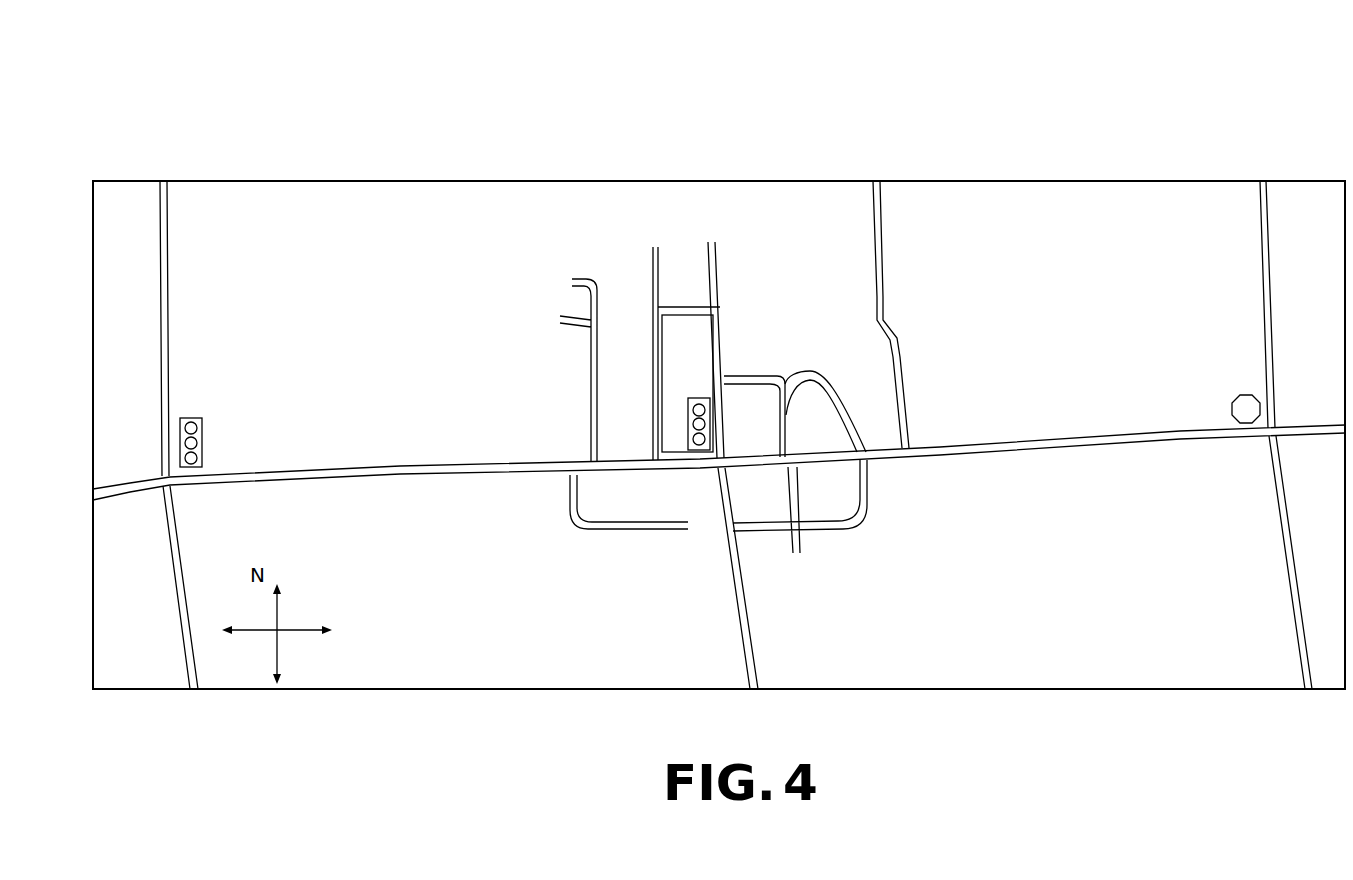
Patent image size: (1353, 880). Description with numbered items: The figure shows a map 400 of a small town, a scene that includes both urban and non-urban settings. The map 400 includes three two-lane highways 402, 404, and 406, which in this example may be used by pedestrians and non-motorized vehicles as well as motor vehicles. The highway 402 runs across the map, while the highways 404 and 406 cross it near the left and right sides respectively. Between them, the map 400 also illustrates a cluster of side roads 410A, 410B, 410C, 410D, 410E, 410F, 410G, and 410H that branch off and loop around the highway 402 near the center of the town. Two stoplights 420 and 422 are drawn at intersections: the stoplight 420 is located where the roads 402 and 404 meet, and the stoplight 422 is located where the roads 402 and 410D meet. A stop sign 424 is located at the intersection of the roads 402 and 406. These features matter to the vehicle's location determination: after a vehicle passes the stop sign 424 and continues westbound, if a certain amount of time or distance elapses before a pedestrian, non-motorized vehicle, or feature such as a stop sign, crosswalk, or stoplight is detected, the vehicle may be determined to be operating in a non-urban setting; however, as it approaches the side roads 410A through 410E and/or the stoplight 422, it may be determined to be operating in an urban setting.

The map 400 is at (251, 80).
The two-lane highway 402 is at (418, 476).
The two-lane highway 404 is at (160, 348).
The two-lane highway 406 is at (1290, 580).
The side road 410A is at (590, 430).
The side road 410B is at (650, 338).
The side road 410C is at (688, 307).
The side road 410D is at (727, 333).
The side road 410E is at (755, 377).
The side road 410F is at (855, 420).
The side road 410G is at (870, 492).
The curved road segment 410H is at (790, 415).
The stoplight 420 is at (192, 418).
The stoplight 422 is at (687, 423).
The stop sign 424 is at (1243, 394).